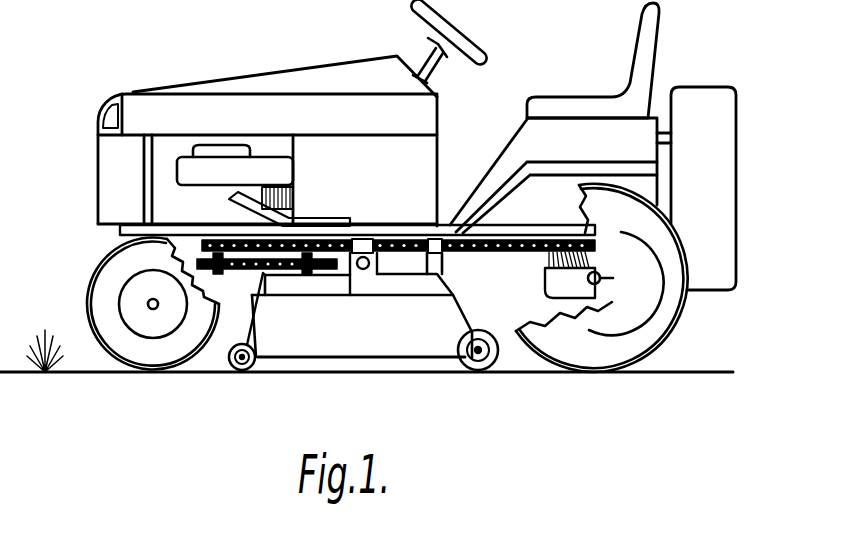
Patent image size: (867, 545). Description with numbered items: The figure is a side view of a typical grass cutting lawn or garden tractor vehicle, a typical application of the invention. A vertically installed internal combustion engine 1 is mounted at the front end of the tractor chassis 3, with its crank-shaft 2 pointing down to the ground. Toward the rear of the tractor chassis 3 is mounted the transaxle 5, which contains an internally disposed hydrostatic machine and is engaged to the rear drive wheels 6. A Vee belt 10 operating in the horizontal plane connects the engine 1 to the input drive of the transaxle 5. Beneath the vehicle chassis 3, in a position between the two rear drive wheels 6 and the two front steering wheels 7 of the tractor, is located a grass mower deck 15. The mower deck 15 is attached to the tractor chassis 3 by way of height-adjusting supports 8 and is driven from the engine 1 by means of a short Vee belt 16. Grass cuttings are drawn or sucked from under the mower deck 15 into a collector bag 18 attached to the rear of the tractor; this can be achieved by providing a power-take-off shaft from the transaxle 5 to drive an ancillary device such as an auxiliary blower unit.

The internal combustion engine 1 is at (208, 168).
The crank-shaft 2 is at (212, 242).
The tractor chassis 3 is at (354, 230).
The transaxle 5 is at (552, 266).
The rear drive wheels 6 is at (660, 293).
The front steering wheels 7 is at (100, 292).
The height-adjusting supports 8 is at (362, 270).
The Vee belt 10 is at (537, 243).
The grass mower deck 15 is at (413, 330).
The short Vee belt 16 is at (247, 272).
The collector bag 18 is at (707, 112).